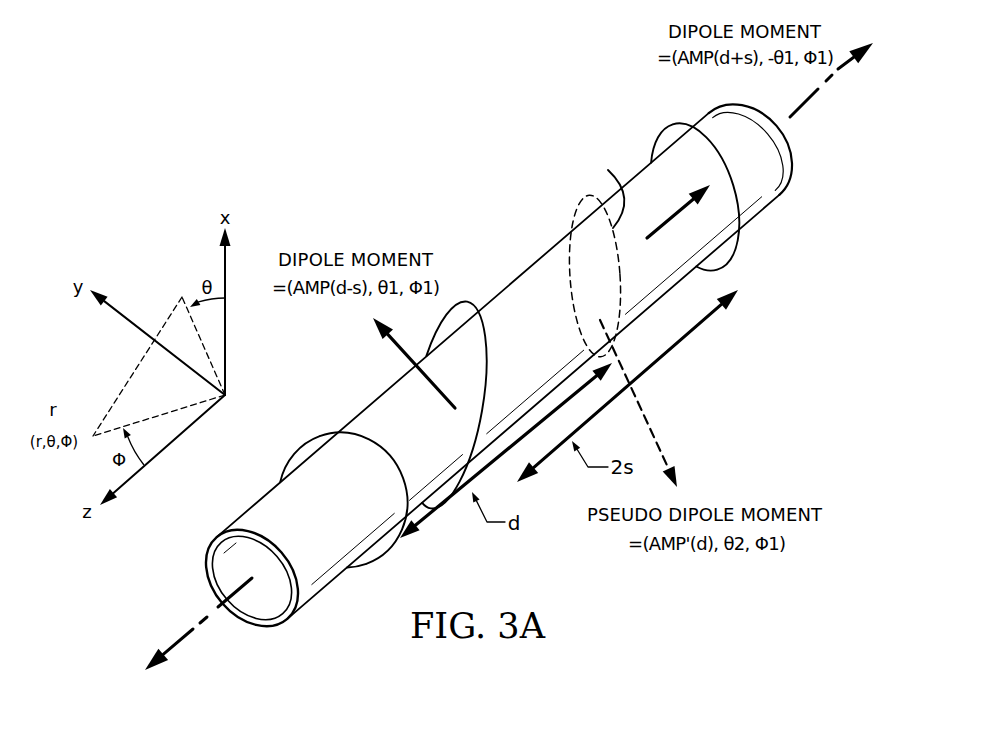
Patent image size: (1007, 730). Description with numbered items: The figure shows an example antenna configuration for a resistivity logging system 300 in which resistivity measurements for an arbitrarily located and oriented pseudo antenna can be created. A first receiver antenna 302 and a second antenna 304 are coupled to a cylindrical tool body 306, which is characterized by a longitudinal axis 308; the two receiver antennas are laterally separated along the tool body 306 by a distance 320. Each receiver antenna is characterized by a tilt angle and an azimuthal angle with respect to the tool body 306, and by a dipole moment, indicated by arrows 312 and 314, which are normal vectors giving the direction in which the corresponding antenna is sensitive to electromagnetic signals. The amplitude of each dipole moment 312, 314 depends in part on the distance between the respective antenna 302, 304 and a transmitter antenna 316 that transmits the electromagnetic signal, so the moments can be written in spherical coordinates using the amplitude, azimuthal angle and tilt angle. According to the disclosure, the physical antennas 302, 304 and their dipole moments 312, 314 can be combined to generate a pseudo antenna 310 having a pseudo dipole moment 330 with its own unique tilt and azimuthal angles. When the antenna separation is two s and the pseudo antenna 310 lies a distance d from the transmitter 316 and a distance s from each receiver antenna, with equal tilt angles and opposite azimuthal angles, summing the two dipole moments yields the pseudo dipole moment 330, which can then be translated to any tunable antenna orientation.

The resistivity logging system 300 is at (263, 117).
The first receiver antenna 302 is at (487, 343).
The second antenna 304 is at (740, 206).
The cylindrical tool body 306 is at (525, 288).
The longitudinal axis 308 is at (186, 633).
The pseudo antenna 310 is at (622, 195).
The dipole moment 312 is at (391, 340).
The dipole moment 314 is at (668, 222).
The transmitter antenna 316 is at (281, 470).
The distance 320 is at (697, 336).
The pseudo dipole moment 330 is at (652, 428).